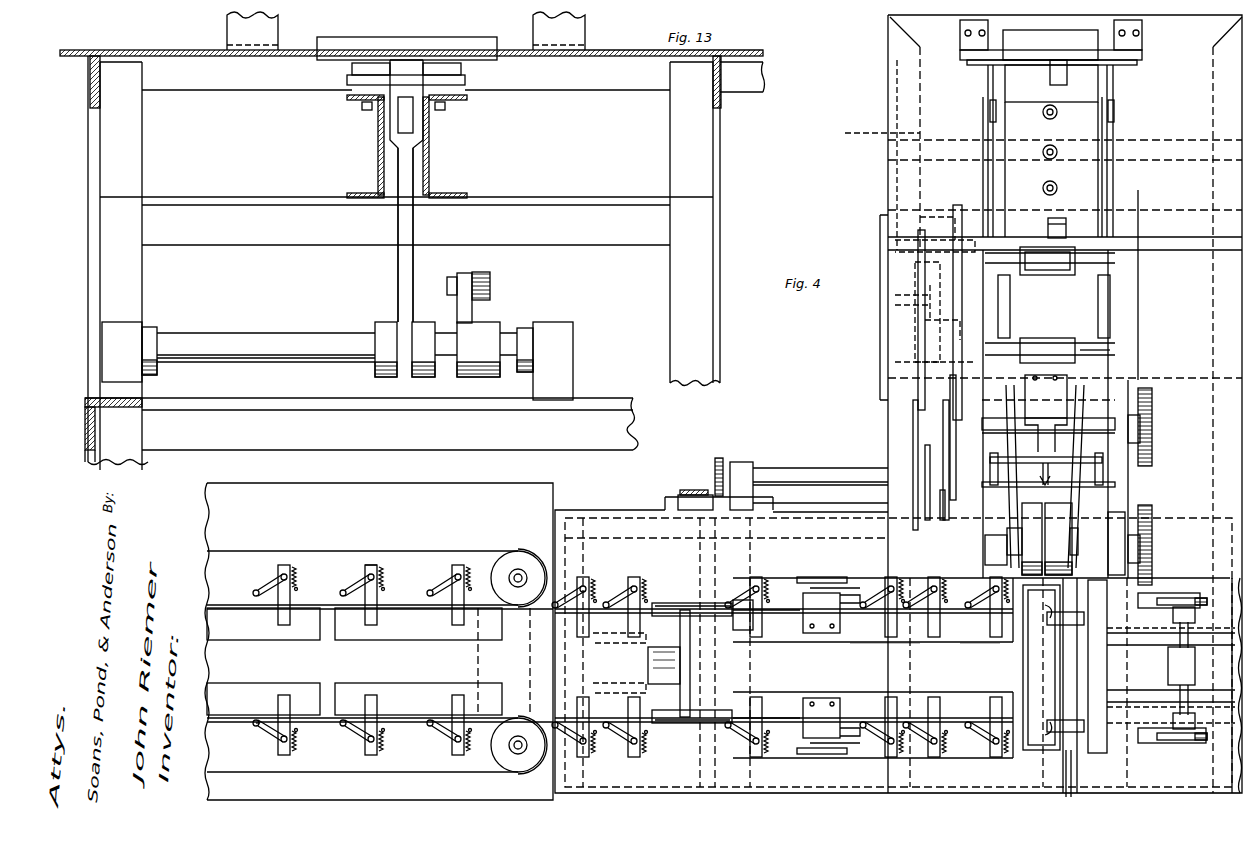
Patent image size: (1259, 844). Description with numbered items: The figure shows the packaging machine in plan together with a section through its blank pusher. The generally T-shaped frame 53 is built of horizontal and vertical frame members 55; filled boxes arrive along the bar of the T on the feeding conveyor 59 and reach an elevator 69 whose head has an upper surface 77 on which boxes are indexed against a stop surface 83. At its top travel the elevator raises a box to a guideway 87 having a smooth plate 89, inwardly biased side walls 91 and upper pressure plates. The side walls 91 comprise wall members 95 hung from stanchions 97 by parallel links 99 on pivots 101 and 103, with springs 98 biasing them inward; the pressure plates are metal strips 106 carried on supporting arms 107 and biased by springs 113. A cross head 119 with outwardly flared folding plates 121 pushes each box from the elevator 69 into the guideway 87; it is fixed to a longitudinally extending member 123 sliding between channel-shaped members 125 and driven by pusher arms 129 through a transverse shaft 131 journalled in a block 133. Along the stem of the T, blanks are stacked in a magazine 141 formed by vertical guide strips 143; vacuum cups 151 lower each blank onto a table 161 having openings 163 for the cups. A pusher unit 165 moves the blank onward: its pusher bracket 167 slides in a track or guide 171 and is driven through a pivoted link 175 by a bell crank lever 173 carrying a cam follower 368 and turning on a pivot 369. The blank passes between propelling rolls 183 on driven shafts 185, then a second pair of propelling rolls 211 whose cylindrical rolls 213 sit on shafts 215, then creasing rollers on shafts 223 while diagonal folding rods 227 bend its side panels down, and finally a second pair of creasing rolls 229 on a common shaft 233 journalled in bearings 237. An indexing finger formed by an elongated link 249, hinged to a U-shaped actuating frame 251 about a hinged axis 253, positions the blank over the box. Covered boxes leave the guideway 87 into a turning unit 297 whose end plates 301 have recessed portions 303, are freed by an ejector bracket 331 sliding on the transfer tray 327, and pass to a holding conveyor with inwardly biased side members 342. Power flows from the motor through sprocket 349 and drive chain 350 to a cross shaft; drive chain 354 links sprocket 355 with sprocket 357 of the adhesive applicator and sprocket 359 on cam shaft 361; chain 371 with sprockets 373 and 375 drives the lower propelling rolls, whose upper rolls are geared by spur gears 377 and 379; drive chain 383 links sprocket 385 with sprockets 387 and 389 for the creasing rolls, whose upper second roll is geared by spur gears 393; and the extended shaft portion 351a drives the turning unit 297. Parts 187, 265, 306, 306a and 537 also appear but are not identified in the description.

In FIG. 4, the frame 53 is at (878, 348).
In FIG. 13, the frame members 55 is at (175, 197).
In FIG. 4, the frame members 55 is at (695, 785).
In FIG. 4, the feeding conveyor 59 is at (1140, 683).
In FIG. 4, the elevator 69 is at (1060, 775).
In FIG. 4, the upper surface of elevator head 77 is at (1052, 689).
In FIG. 4, the guide surface 83 is at (1226, 685).
In FIG. 4, the guideway 87 is at (868, 661).
In FIG. 4, the plate 89 is at (808, 668).
In FIG. 4, the side walls 91 is at (930, 615).
In FIG. 4, the wall members 95 is at (785, 612).
In FIG. 4, the stanchions 97 is at (368, 580).
In FIG. 4, the springs 98 is at (290, 595).
In FIG. 4, the links 99 is at (268, 590).
In FIG. 4, the pivots 101 is at (865, 600).
In FIG. 4, the pivots 103 is at (933, 580).
In FIG. 4, the strips of metal 106 is at (975, 635).
In FIG. 4, the supporting arms 107 is at (795, 620).
In FIG. 4, the springs 113 is at (285, 740).
In FIG. 4, the cross head 119 is at (736, 462).
In FIG. 4, the folding plate 121 is at (1050, 608).
In FIG. 4, the longitudinally extending member 123 is at (1115, 655).
In FIG. 4, the channel-shaped members 125 is at (1160, 665).
In FIG. 4, the pusher arms 129 is at (1190, 593).
In FIG. 4, the shaft 131 is at (1183, 638).
In FIG. 4, the block 133 is at (1180, 675).
In FIG. 13, the magazine 141 is at (519, 31).
In FIG. 4, the magazine 141 is at (1123, 115).
In FIG. 4, the guide strips 143 is at (1055, 218).
In FIG. 4, the vacuum cups 151 is at (1058, 185).
In FIG. 13, the table 161 is at (645, 25).
In FIG. 4, the table 161 is at (1100, 128).
In FIG. 4, the openings 163 is at (1043, 182).
In FIG. 13, the pusher unit 165 is at (340, 129).
In FIG. 13, the pusher bracket 167 is at (407, 78).
In FIG. 13, the track or guide 171 is at (375, 105).
In FIG. 13, the bell crank lever 173 is at (405, 277).
In FIG. 13, the pivoted link 175 is at (410, 118).
In FIG. 4, the rolls 183 is at (1055, 275).
In FIG. 4, the driven shaft 185 is at (1095, 265).
In FIG. 4, the rail 187 is at (1115, 258).
In FIG. 4, the second pair of propelling rolls 211 is at (1047, 331).
In FIG. 4, the cylindrical rolls 213 is at (1022, 320).
In FIG. 4, the shaft 215 is at (1092, 345).
In FIG. 4, the shaft 223 is at (1100, 420).
In FIG. 4, the folding rods 227 is at (1048, 476).
In FIG. 4, the second pair of creasing rolls 229 is at (1062, 512).
In FIG. 4, the shaft 233 is at (997, 550).
In FIG. 4, the bearings 237 is at (1120, 521).
In FIG. 4, the link 249 is at (1110, 488).
In FIG. 4, the actuating frame 251 is at (1048, 452).
In FIG. 4, the hinged axis 253 is at (1045, 470).
In FIG. 4, the solenoid 265 is at (818, 583).
In FIG. 4, the turning unit 297 is at (662, 660).
In FIG. 4, the end plates 301 is at (665, 612).
In FIG. 4, the recessed portion 303 is at (655, 670).
In FIG. 4, the belt 306 is at (488, 565).
In FIG. 4, the belt support 306a is at (388, 656).
In FIG. 4, the transfer tray 327 is at (640, 525).
In FIG. 4, the bracket 331 is at (676, 600).
In FIG. 4, the side members 342 is at (398, 605).
In FIG. 4, the sprocket 349 is at (925, 460).
In FIG. 4, the drive chain 350 is at (948, 512).
In FIG. 4, the extended portion of cross shaft 351a is at (830, 450).
In FIG. 4, the drive chain 354 is at (895, 210).
In FIG. 4, the sprocket 355 is at (900, 500).
In FIG. 4, the sprocket 357 is at (895, 295).
In FIG. 4, the sprocket 359 is at (882, 124).
In FIG. 4, the shaft 361 is at (975, 122).
In FIG. 13, the cam follower 368 is at (490, 282).
In FIG. 13, the pivot 369 is at (350, 338).
In FIG. 4, the chain 371 is at (952, 312).
In FIG. 4, the sprocket 373 is at (920, 318).
In FIG. 4, the sprocket 375 is at (950, 233).
In FIG. 4, the spur gears 377 is at (915, 237).
In FIG. 4, the spur gears 379 is at (895, 362).
In FIG. 4, the drive chain 383 is at (925, 450).
In FIG. 4, the sprocket 385 is at (935, 445).
In FIG. 4, the sprocket 387 is at (1048, 415).
In FIG. 4, the sprocket 389 is at (913, 405).
In FIG. 4, the spur gears 393 is at (1159, 413).
In FIG. 4, the shaft 537 is at (805, 492).